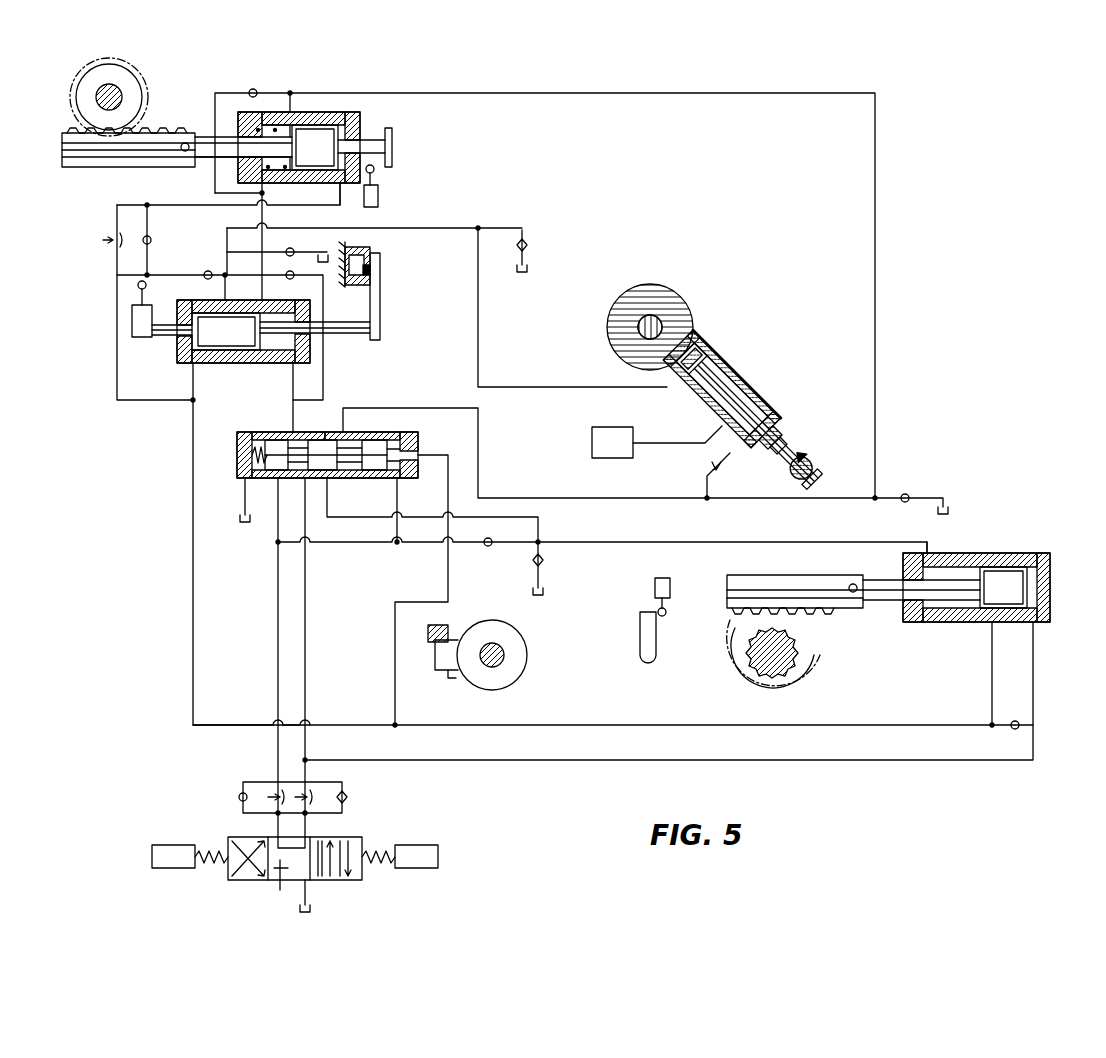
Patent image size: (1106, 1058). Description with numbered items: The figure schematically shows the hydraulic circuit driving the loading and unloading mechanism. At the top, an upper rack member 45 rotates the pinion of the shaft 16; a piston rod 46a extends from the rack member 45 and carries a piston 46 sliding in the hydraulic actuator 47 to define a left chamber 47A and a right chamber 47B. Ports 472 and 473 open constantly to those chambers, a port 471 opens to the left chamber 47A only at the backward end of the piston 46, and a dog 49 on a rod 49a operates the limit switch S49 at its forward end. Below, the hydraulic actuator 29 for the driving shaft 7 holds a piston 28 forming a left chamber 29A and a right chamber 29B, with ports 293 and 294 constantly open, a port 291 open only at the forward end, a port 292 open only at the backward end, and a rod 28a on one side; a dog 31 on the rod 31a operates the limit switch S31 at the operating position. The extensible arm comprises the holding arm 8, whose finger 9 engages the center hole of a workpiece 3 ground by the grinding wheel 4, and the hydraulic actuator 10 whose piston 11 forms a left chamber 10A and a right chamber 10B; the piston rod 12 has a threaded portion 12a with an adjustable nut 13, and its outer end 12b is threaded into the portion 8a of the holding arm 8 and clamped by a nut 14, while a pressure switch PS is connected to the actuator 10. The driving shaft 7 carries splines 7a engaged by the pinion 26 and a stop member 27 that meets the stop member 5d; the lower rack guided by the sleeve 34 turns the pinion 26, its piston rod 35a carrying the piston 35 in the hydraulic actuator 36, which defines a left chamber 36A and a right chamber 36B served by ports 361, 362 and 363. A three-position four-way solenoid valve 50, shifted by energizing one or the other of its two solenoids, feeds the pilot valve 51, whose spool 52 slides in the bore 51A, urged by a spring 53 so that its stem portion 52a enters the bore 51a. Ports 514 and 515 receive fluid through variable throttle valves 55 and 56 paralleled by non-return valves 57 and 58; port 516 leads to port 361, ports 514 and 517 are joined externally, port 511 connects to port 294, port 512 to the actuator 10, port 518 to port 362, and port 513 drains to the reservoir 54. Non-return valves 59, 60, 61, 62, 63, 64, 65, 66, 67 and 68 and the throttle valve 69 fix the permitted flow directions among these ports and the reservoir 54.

The workpiece 3 is at (362, 247).
The grinding wheel 4 is at (159, 128).
The driving shaft 7 is at (653, 320).
The splines 7a is at (796, 655).
The holding arm 8 is at (380, 290).
The rotatably extended portion 8a is at (812, 458).
The finger 9 is at (372, 268).
The hydraulic actuator 10 is at (750, 421).
The left chamber 10A is at (696, 336).
The right chamber 10B is at (732, 382).
The piston 11 is at (704, 352).
The piston rod 12 is at (748, 398).
The threaded portion 12a is at (794, 438).
The outer end 12b is at (808, 482).
The adjustable nut 13 is at (780, 422).
The nut 14 is at (812, 465).
The shaft 16 is at (120, 92).
The pinion 26 is at (736, 626).
The stop member 27 is at (446, 672).
The piston 28 is at (236, 338).
The piston rod 28a is at (330, 334).
The hydraulic actuator 29 is at (245, 351).
The left chamber 29A is at (215, 361).
The right chamber 29B is at (310, 312).
The port 291 is at (224, 298).
The port 292 is at (263, 297).
The port 293 is at (196, 366).
The port 294 is at (300, 364).
The dog 31 is at (132, 322).
The rod 31a is at (166, 336).
The sleeve 34 is at (770, 576).
The piston 35 is at (1030, 592).
The piston rod 35a is at (896, 600).
The hydraulic actuator 36 is at (1000, 583).
The left chamber 36A is at (946, 620).
The right chamber 36B is at (1046, 580).
The port 361 is at (930, 552).
The port 362 is at (994, 623).
The port 363 is at (1034, 623).
The upper rack member 45 is at (72, 150).
The piston 46 is at (323, 156).
The piston rod 46a is at (230, 140).
The hydraulic actuator 47 is at (330, 137).
The left chamber 47A is at (278, 118).
The right chamber 47B is at (358, 115).
The port 471 is at (292, 128).
The port 472 is at (268, 181).
The port 473 is at (340, 203).
The dog 49 is at (390, 140).
The rod 49a is at (392, 136).
The solenoid valve 50 is at (370, 839).
The pilot valve 51 is at (332, 457).
The bore 51A is at (360, 478).
The bore 51a is at (406, 478).
The port 511 is at (291, 432).
The port 512 is at (342, 432).
The port 513 is at (244, 480).
The port 514 is at (277, 480).
The port 515 is at (305, 480).
The port 516 is at (328, 480).
The port 517 is at (398, 480).
The port 518 is at (420, 455).
The spool 52 is at (375, 445).
The small stem portion 52a is at (400, 447).
The spring 53 is at (246, 450).
The reservoir 54 is at (250, 519).
The variable throttle valve 55 is at (276, 794).
The variable throttle valve 56 is at (312, 794).
The non-return valve 57 is at (239, 797).
The non-return valve 58 is at (347, 797).
The non-return valve 59 is at (486, 546).
The non-return valve 60 is at (543, 560).
The non-return valve 61 is at (1014, 721).
The non-return valve 62 is at (151, 240).
The non-return valve 63 is at (284, 274).
The non-return valve 64 is at (284, 250).
The non-return valve 65 is at (253, 89).
The non-return valve 66 is at (905, 494).
The non-return valve 67 is at (527, 243).
The non-return valve 68 is at (208, 271).
The throttle valve 69 is at (104, 238).
The stop member 5d is at (446, 628).
The limit switch S31 is at (138, 285).
The limit switch S49 is at (380, 194).
The pressure switch PS is at (657, 442).